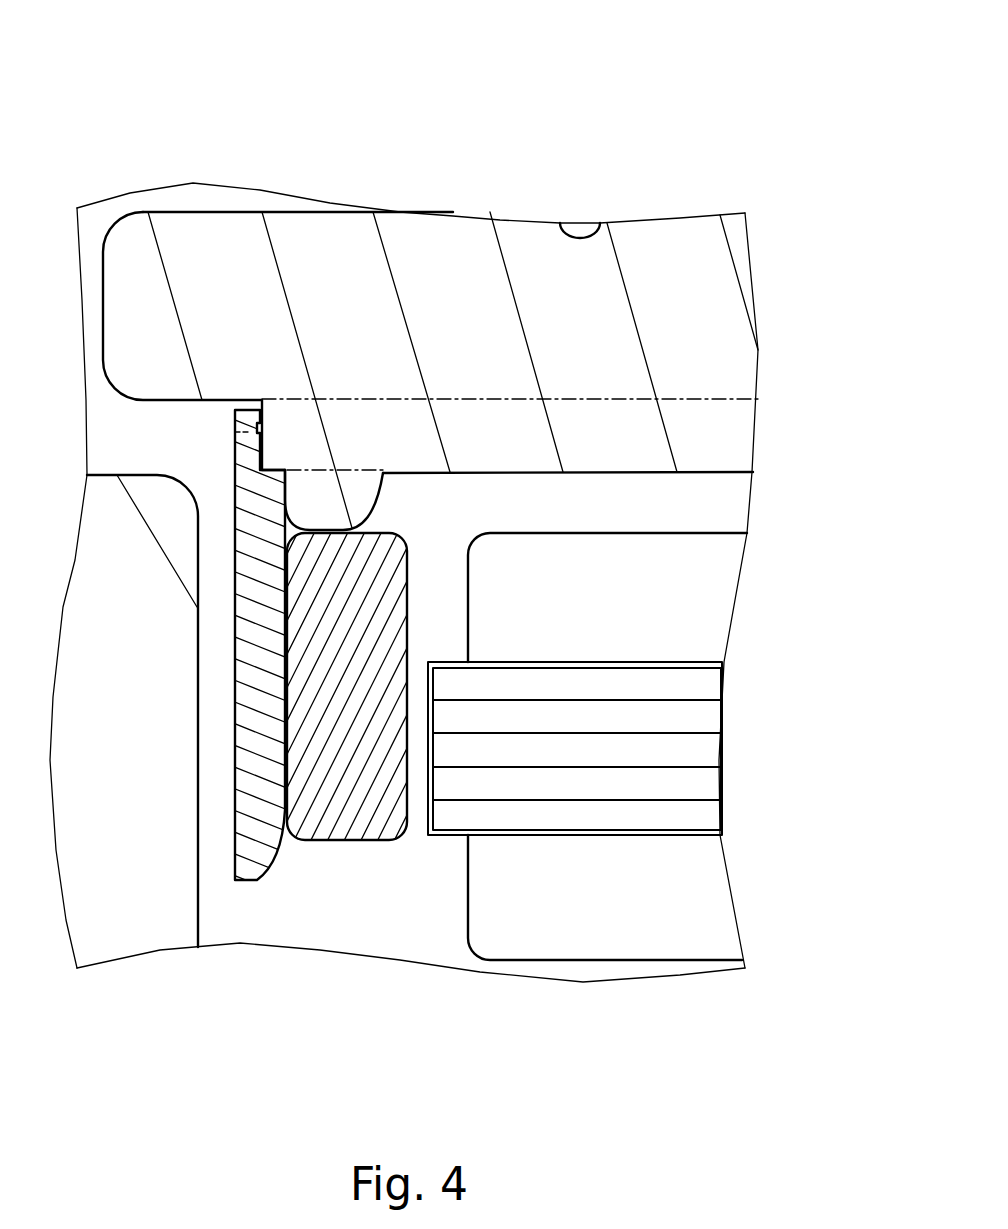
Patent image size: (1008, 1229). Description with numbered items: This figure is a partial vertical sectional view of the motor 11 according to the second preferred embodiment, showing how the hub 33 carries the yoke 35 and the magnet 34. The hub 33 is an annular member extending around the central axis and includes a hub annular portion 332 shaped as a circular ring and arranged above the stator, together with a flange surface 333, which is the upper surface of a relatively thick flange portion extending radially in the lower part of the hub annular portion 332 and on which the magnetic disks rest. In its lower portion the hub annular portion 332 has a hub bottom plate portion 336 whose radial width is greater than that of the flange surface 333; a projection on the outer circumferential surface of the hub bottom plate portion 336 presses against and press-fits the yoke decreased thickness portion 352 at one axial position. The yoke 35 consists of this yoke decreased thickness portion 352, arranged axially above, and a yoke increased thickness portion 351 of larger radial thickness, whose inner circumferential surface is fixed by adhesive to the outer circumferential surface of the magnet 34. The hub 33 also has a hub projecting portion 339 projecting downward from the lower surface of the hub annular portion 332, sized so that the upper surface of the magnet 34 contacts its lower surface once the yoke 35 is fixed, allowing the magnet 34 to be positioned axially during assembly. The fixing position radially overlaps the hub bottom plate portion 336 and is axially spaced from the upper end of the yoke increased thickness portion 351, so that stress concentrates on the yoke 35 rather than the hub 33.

The motor 11 is at (521, 117).
The hub 33 is at (430, 284).
The hub annular portion 332 is at (430, 303).
The flange surface 333 is at (298, 145).
The hub bottom plate portion 336 is at (644, 275).
The hub projecting portion 339 is at (285, 304).
The magnet 34 is at (362, 800).
The yoke 35 is at (188, 770).
The yoke increased thickness portion 351 is at (247, 749).
The yoke decreased thickness portion 352 is at (252, 1086).